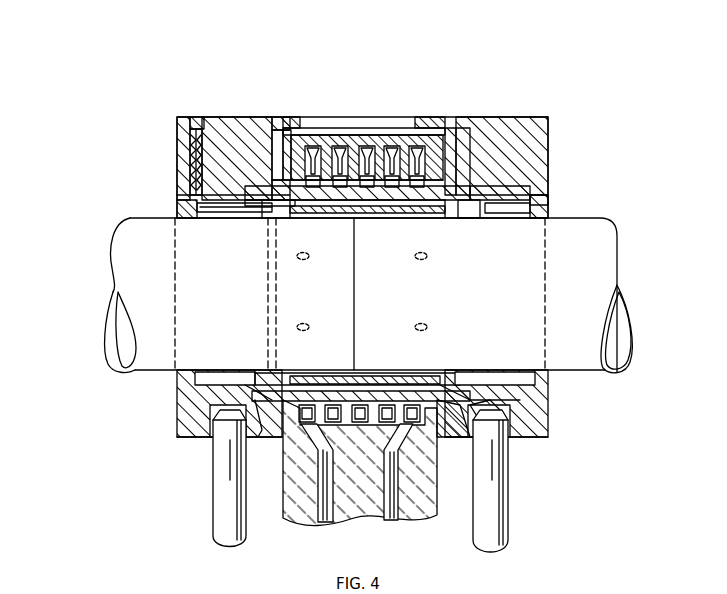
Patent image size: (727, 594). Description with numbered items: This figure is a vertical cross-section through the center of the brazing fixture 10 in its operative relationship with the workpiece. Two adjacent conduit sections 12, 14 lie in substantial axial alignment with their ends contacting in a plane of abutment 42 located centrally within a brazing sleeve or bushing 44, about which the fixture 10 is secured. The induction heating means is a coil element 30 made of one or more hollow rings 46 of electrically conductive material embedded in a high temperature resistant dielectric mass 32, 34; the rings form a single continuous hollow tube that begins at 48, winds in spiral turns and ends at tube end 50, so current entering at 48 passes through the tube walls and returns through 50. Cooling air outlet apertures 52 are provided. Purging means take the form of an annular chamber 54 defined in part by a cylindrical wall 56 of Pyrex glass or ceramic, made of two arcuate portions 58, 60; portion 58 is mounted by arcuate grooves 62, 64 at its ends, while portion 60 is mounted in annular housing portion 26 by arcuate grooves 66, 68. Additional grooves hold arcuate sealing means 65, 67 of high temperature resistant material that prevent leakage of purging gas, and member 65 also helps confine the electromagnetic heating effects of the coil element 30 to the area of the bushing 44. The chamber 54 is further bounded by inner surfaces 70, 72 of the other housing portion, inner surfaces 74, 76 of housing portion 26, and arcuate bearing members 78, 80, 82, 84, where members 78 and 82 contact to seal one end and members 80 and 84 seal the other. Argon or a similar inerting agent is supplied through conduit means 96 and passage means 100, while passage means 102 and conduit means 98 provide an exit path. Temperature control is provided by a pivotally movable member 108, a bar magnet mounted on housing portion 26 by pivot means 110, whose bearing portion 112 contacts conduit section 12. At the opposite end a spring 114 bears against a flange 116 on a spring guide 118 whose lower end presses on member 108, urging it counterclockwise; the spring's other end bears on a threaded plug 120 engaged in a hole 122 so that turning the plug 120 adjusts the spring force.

The brazing fixture 10 is at (250, 114).
The conduit section 12 is at (128, 292).
The conduit section 14 is at (605, 248).
The annular housing portion 26 is at (546, 147).
The coil element 30 is at (442, 472).
The dielectric mass 32 is at (356, 146).
The dielectric mass 34 is at (372, 522).
The plane of abutment 42 is at (355, 338).
The brazing sleeve or bushing 44 is at (356, 228).
The hollow rings 46 is at (418, 206).
The tube beginning 48 is at (322, 518).
The tube end 50 is at (398, 520).
The apertures 52 is at (318, 140).
The annular chamber 54 is at (312, 216).
The cylindrical wall 56 is at (468, 200).
The arcuate portion 58 is at (447, 440).
The arcuate portion 60 is at (262, 194).
The arcuate groove 62 is at (260, 437).
The arcuate groove 64 is at (478, 420).
The arcuate sealing means 65 is at (450, 150).
The arcuate groove 66 is at (262, 206).
The arcuate sealing means 67 is at (470, 180).
The arcuate groove 68 is at (506, 215).
The inner surface 70 is at (256, 374).
The inner surface 72 is at (470, 374).
The inner surface 74 is at (256, 214).
The inner surface 76 is at (470, 218).
The arcuate bearing member 78 is at (180, 390).
The arcuate bearing member 80 is at (540, 386).
The arcuate bearing member 82 is at (180, 215).
The arcuate bearing member 84 is at (548, 212).
The conduit means 96 is at (222, 492).
The conduit means 98 is at (492, 525).
The passage means 100 is at (225, 402).
The passage means 102 is at (525, 410).
The pivotally movable member 108 is at (232, 215).
The pivot means 110 is at (210, 213).
The bearing portion 112 is at (262, 220).
The spring 114 is at (190, 170).
The flange 116 is at (186, 196).
The spring guide 118 is at (193, 134).
The threaded plug 120 is at (195, 121).
The hole 122 is at (210, 132).